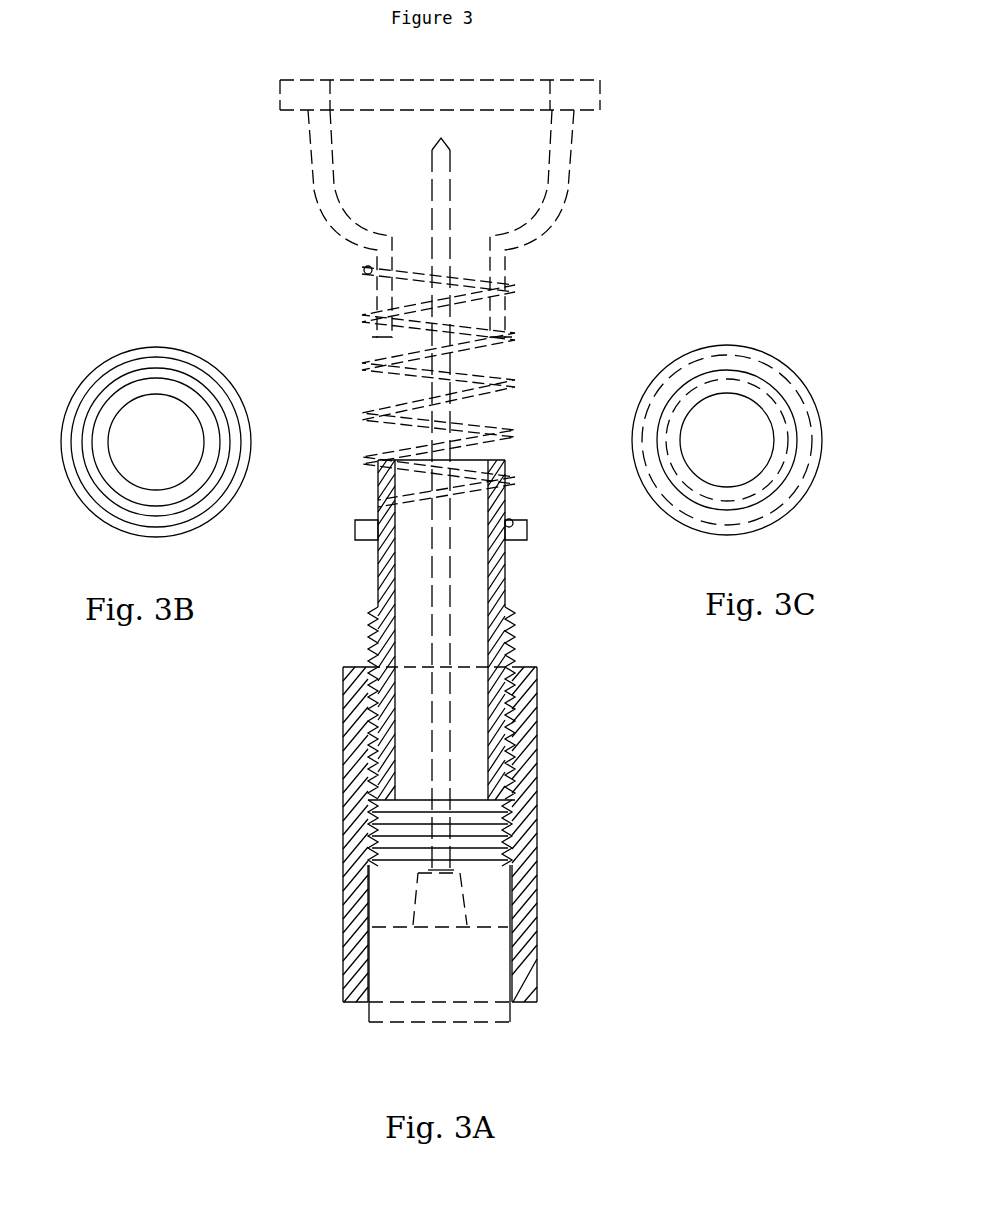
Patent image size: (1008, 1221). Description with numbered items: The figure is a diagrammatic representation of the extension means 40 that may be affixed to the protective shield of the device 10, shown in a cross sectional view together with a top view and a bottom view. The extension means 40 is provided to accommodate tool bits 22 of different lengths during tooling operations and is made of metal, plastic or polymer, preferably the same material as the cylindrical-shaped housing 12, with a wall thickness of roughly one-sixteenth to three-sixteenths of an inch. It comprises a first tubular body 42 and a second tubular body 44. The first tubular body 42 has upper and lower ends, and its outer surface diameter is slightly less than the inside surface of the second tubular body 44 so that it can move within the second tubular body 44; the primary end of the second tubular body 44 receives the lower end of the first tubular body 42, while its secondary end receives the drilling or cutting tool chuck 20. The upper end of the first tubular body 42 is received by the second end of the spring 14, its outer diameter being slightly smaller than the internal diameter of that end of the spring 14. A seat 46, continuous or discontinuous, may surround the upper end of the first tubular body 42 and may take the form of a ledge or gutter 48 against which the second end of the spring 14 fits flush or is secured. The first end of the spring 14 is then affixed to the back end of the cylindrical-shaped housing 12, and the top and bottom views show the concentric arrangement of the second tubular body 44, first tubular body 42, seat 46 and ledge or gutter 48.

In FIG. 3A, the device 10 is at (366, 276).
In FIG. 3A, the cylindrical-shaped housing 12 is at (318, 199).
In FIG. 3A, the spring 14 is at (515, 334).
In FIG. 3A, the drilling or cutting tool chuck 20 is at (390, 972).
In FIG. 3A, the tool bit 22 is at (452, 187).
In FIG. 3A, the extension means 40 is at (370, 763).
In FIG. 3B, the extension means 40 is at (90, 374).
In FIG. 3C, the extension means 40 is at (816, 410).
In FIG. 3A, the first tubular body 42 is at (372, 606).
In FIG. 3B, the first tubular body 42 is at (117, 482).
In FIG. 3C, the first tubular body 42 is at (776, 490).
In FIG. 3A, the second tubular body 44 is at (536, 872).
In FIG. 3B, the second tubular body 44 is at (148, 346).
In FIG. 3C, the second tubular body 44 is at (752, 346).
In FIG. 3A, the seat 46 is at (373, 528).
In FIG. 3B, the seat 46 is at (217, 478).
In FIG. 3C, the seat 46 is at (660, 478).
In FIG. 3A, the ledge or gutter 48 is at (357, 521).
In FIG. 3B, the ledge or gutter 48 is at (209, 508).
In FIG. 3C, the ledge or gutter 48 is at (668, 508).